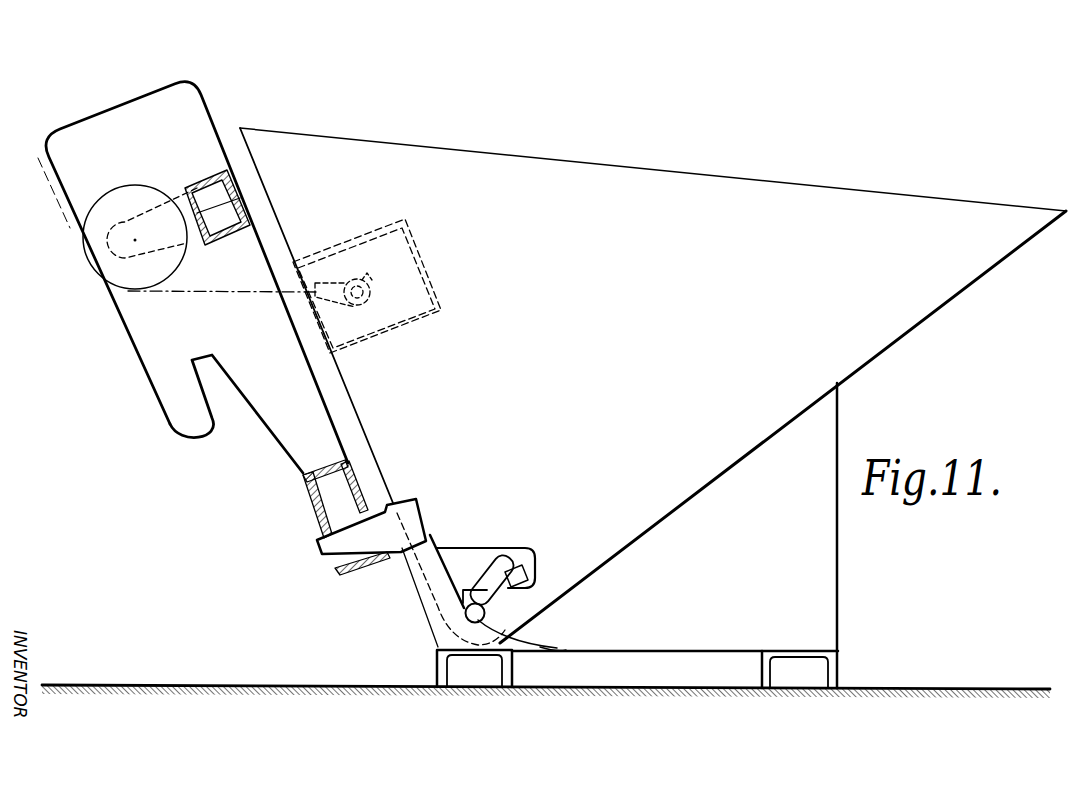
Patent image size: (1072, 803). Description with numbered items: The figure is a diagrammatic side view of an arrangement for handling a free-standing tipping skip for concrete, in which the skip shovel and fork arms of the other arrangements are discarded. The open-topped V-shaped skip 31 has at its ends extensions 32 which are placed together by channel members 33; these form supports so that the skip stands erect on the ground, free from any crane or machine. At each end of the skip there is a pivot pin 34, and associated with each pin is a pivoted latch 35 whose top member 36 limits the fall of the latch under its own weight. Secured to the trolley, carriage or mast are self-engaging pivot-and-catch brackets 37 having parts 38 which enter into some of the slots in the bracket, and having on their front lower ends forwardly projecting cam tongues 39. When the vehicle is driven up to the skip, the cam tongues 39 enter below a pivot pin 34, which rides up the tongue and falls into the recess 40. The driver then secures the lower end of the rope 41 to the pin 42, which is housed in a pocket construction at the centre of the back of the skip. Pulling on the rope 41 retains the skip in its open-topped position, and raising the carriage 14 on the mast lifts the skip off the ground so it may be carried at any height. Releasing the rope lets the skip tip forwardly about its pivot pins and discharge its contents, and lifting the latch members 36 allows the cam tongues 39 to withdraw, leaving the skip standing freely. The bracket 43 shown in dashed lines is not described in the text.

The carriage 14 is at (272, 451).
The open-topped V-shaped skip 31 is at (901, 311).
The end extensions 32 is at (822, 572).
The channel members 33 is at (505, 670).
The pivot pin 34 is at (432, 628).
The pivoted latch 35 is at (490, 598).
The top member 36 is at (521, 570).
The self-engaging pivot-and-catch bracket 37 is at (435, 600).
The parts 38 is at (338, 550).
The cam tongue 39 is at (548, 645).
The recess 40 is at (492, 620).
The rope 41 is at (173, 293).
The pin 42 is at (365, 290).
The hinge bracket 43 is at (398, 313).